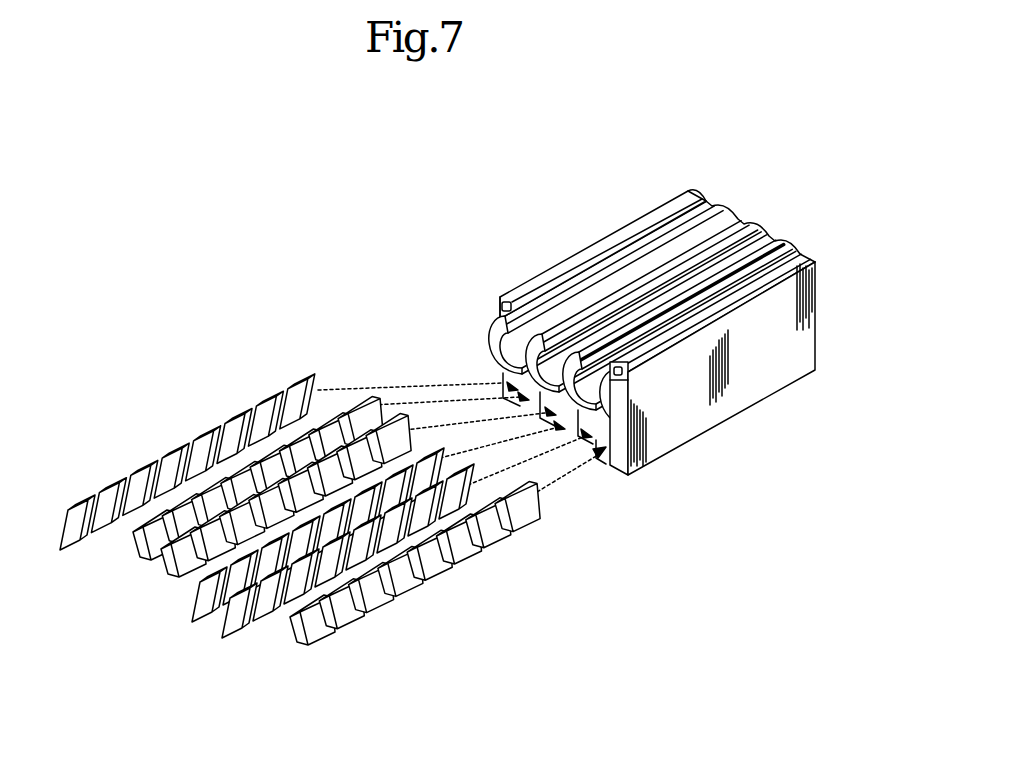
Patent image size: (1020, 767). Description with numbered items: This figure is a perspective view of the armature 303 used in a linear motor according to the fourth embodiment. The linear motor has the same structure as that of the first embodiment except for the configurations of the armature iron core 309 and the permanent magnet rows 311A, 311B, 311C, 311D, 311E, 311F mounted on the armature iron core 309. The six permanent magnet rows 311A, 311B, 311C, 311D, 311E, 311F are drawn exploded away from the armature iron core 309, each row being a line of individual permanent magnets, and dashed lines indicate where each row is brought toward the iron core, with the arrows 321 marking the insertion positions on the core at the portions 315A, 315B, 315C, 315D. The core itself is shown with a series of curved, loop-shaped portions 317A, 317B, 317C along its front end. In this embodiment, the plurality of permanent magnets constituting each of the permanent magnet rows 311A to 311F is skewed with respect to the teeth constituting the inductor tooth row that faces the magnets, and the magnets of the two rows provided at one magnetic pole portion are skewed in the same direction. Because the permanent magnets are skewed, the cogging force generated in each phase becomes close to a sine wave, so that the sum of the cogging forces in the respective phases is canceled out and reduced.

The armature 303 is at (514, 262).
The armature iron core 309 is at (737, 388).
The permanent magnet row 311A is at (104, 473).
The permanent magnet row 311B is at (135, 568).
The permanent magnet row 311C is at (162, 588).
The permanent magnet row 311D is at (196, 632).
The permanent magnet row 311E is at (247, 638).
The permanent magnet row 311F is at (330, 650).
The first connector 315A is at (503, 378).
The second connector 315B is at (549, 432).
The third connector 315C is at (606, 455).
The fourth connector 315D is at (618, 470).
The first curved fin 317A is at (531, 352).
The second curved fin 317B is at (567, 375).
The third curved fin 317C is at (603, 392).
The insertion arrows 321 is at (526, 414).